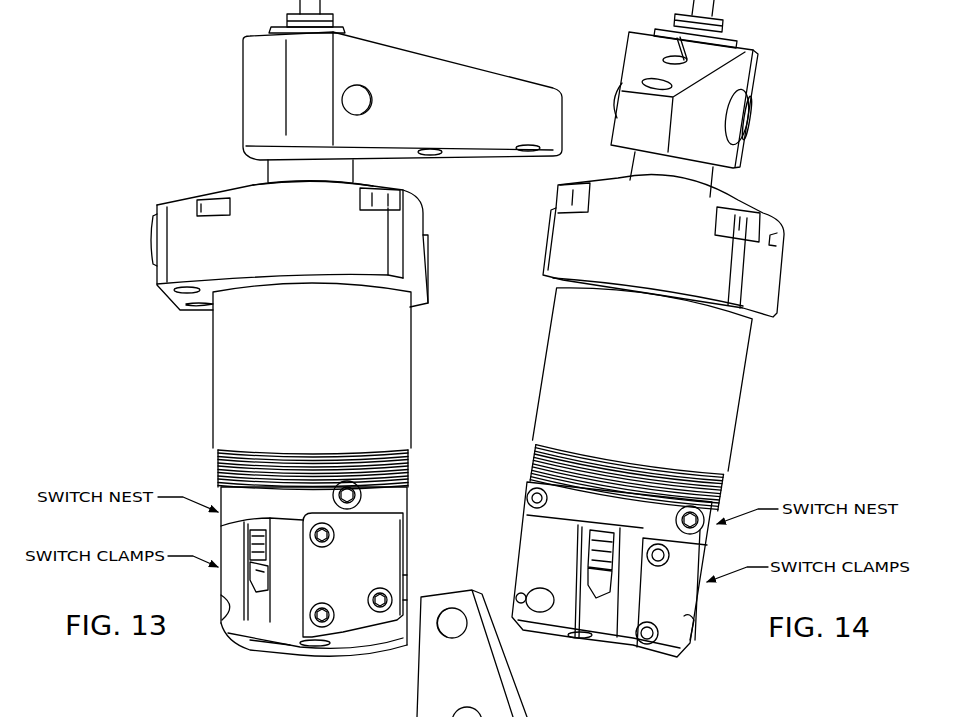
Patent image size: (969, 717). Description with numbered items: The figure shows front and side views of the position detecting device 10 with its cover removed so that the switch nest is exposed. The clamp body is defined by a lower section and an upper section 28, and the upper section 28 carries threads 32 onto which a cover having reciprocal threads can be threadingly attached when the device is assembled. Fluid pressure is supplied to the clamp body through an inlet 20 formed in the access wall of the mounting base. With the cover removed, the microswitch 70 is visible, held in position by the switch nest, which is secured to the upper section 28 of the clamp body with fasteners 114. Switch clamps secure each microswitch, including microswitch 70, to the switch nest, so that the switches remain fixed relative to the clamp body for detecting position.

In FIG. 13, the position detecting device 10 is at (427, 333).
In FIG. 14, the position detecting device 10 is at (778, 340).
In FIG. 14, the inlet 20 is at (742, 390).
In FIG. 13, the upper section 28 is at (413, 382).
In FIG. 13, the threads 32 is at (413, 470).
In FIG. 13, the microswitch 70 is at (360, 716).
In FIG. 14, the fasteners 114 is at (707, 500).